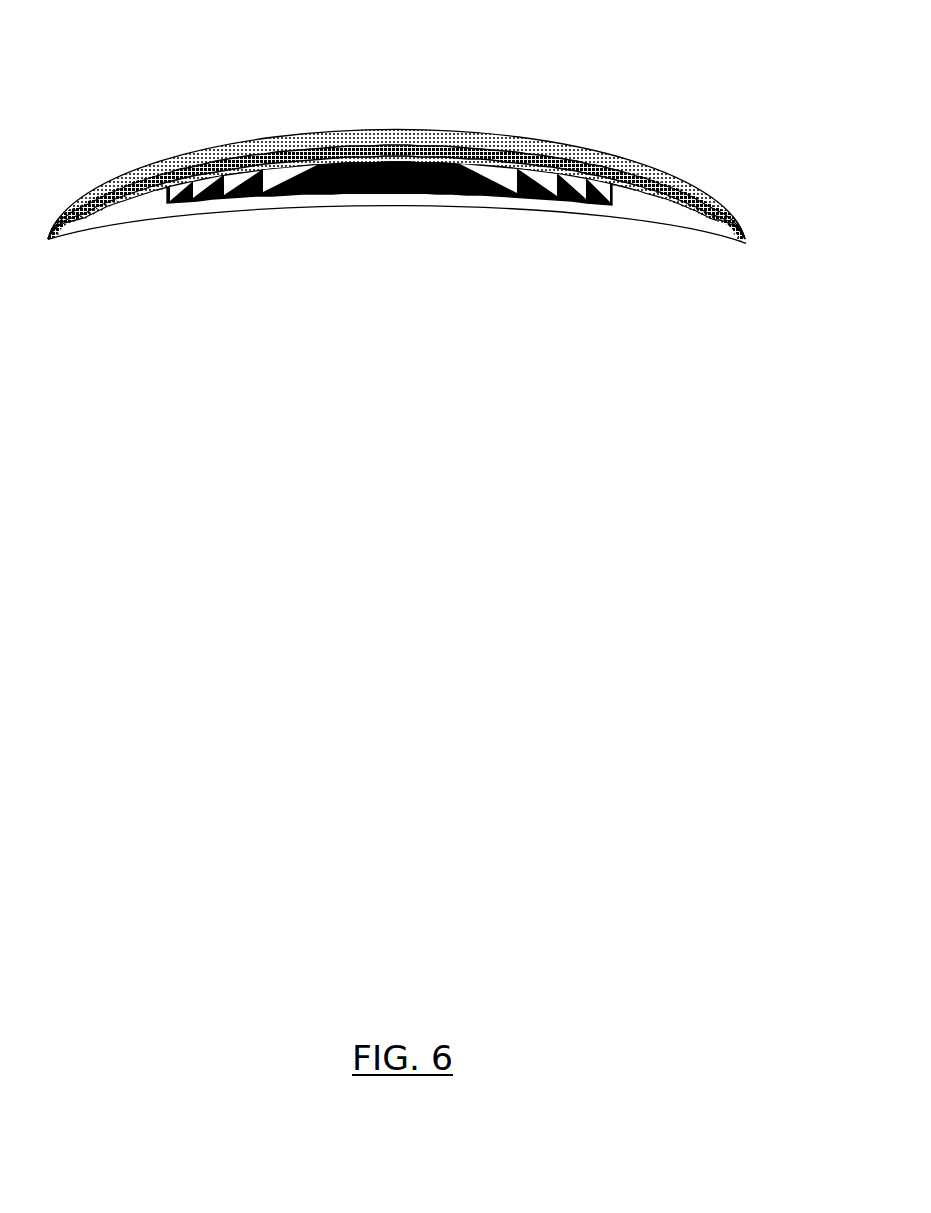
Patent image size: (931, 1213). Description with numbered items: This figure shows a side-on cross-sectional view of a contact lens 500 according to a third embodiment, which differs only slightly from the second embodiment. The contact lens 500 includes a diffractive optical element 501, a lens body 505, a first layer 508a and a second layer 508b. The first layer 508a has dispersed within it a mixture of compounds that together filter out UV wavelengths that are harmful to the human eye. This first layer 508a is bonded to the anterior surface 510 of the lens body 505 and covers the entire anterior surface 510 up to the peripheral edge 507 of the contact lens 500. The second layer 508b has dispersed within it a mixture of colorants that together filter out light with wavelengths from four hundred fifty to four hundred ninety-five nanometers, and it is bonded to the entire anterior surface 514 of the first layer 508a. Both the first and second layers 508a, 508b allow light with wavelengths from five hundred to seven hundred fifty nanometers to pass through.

The contact lens 500 is at (213, 91).
The diffractive optical element 501 is at (377, 188).
The lens body 505 is at (637, 212).
The peripheral edge 507 is at (48, 242).
The first layer 508a is at (664, 180).
The second layer 508b is at (625, 162).
The anterior surface of the lens body 510 is at (522, 162).
The anterior surface of the first layer 514 is at (593, 162).